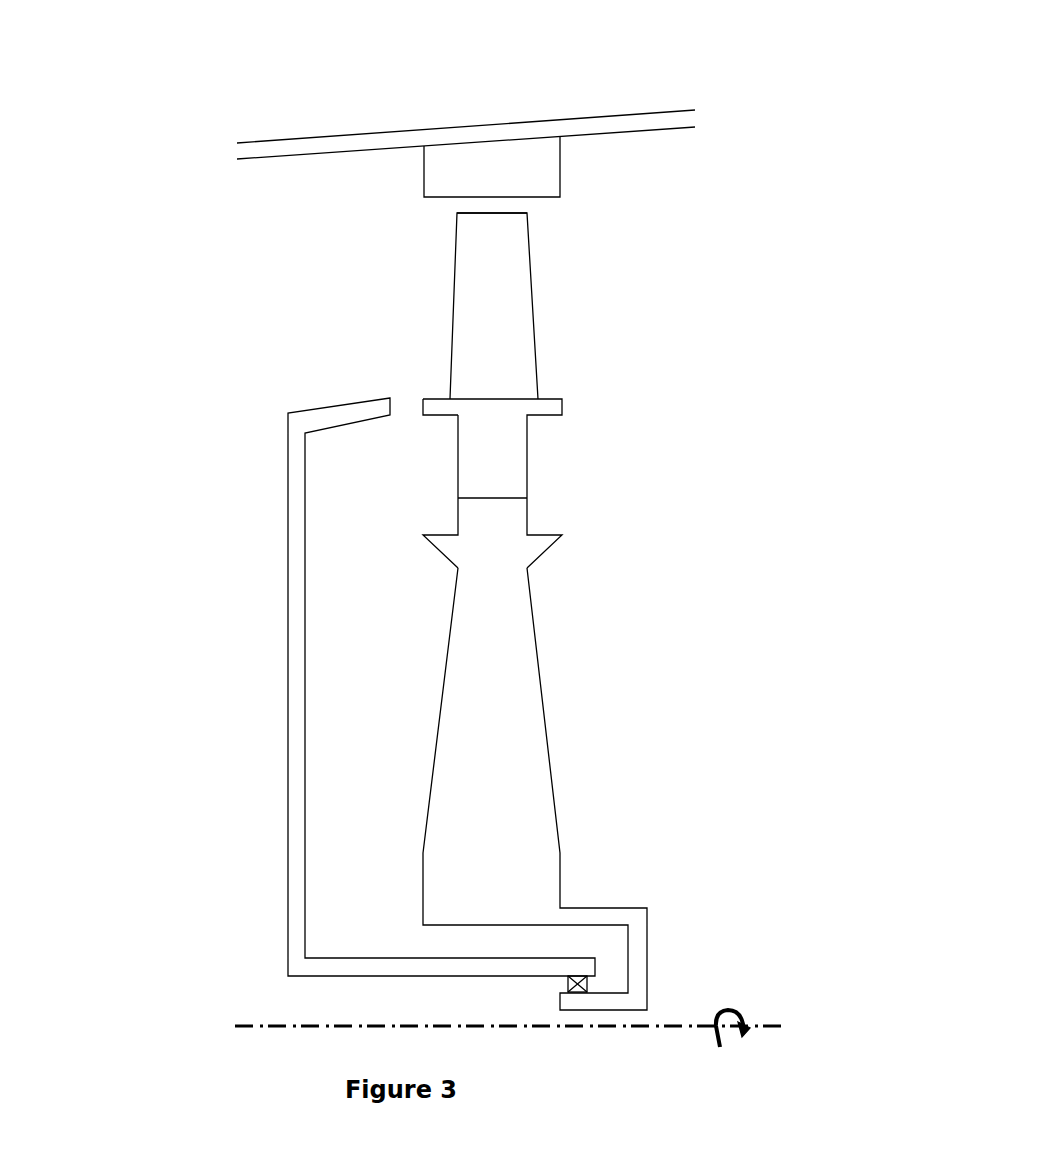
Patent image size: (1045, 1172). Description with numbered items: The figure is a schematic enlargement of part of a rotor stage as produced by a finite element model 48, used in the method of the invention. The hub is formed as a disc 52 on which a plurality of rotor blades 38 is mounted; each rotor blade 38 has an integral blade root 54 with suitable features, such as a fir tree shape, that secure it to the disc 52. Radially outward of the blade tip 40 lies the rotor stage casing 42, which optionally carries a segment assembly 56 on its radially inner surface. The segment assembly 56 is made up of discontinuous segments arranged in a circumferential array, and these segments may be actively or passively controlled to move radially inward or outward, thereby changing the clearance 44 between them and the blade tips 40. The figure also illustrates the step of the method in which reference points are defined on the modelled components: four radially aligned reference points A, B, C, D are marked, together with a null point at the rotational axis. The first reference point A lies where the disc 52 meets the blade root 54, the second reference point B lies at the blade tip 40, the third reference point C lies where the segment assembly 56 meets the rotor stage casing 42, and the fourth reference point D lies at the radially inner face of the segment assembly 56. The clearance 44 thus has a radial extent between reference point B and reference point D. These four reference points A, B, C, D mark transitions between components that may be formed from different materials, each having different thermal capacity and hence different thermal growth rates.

The rotor blade 38 is at (476, 313).
The blade tip 40 is at (473, 217).
The rotor stage casing 42 is at (628, 122).
The clearance 44 is at (442, 208).
The finite element model 48 is at (170, 223).
The disc 52 is at (515, 665).
The blade root 54 is at (513, 445).
The segment assembly 56 is at (543, 163).
The first reference point A is at (497, 507).
The second reference point B is at (495, 215).
The third reference point C is at (495, 137).
The fourth reference point D is at (495, 193).